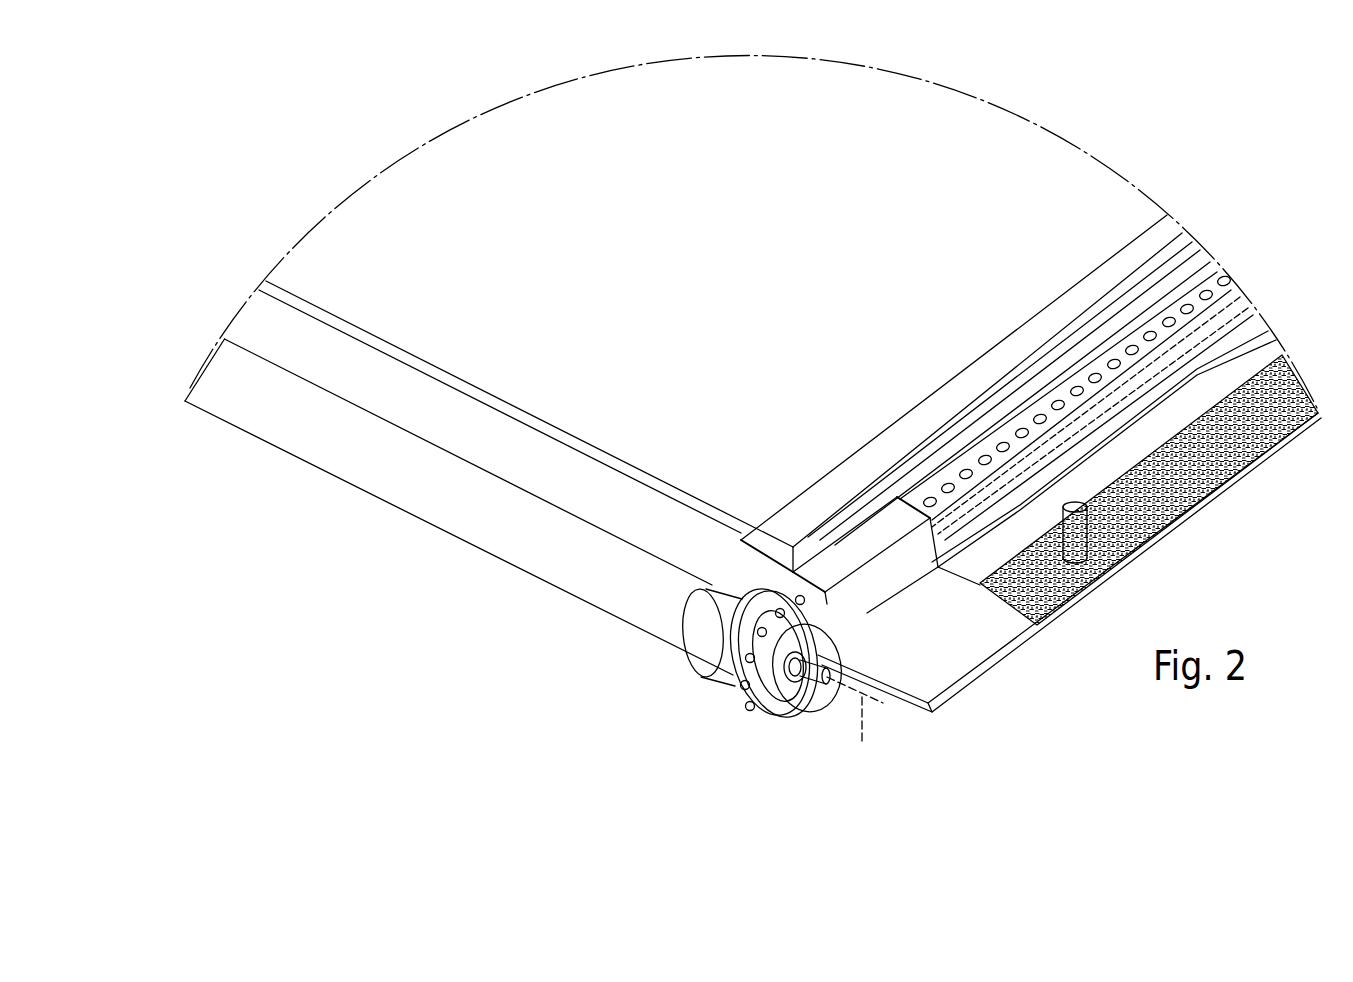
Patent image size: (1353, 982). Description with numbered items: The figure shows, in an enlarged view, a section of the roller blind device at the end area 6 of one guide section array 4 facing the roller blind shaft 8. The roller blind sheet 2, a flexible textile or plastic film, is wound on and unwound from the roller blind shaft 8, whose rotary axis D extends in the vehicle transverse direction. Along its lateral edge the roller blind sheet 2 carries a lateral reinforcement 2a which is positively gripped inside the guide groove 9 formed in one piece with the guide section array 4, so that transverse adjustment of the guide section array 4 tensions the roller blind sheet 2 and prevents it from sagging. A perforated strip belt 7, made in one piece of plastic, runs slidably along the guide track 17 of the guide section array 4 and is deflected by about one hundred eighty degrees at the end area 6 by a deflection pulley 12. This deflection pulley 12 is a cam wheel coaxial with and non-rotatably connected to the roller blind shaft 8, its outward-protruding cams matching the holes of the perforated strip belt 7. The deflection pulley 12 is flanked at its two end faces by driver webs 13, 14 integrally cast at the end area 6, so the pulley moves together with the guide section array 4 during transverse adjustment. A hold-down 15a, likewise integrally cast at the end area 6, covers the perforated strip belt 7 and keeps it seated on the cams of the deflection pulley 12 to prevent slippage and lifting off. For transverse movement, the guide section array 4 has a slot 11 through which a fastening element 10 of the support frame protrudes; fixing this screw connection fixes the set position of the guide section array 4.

The roller blind sheet 2 is at (535, 385).
The lateral reinforcement 2a is at (740, 570).
The guide section array 4 is at (1133, 442).
The end area 6 is at (910, 636).
The perforated strip belt 7 is at (1030, 426).
The roller blind shaft 8 is at (683, 637).
The guide groove 9 is at (932, 428).
The fastening element 10 is at (1143, 545).
The slot 11 is at (1068, 607).
The deflection pulley 12 is at (730, 687).
The driver web 13 is at (735, 668).
The driver web 14 is at (782, 716).
The hold-down 15a is at (885, 542).
The guide track 17 is at (1244, 297).
The rotary axis D is at (855, 725).